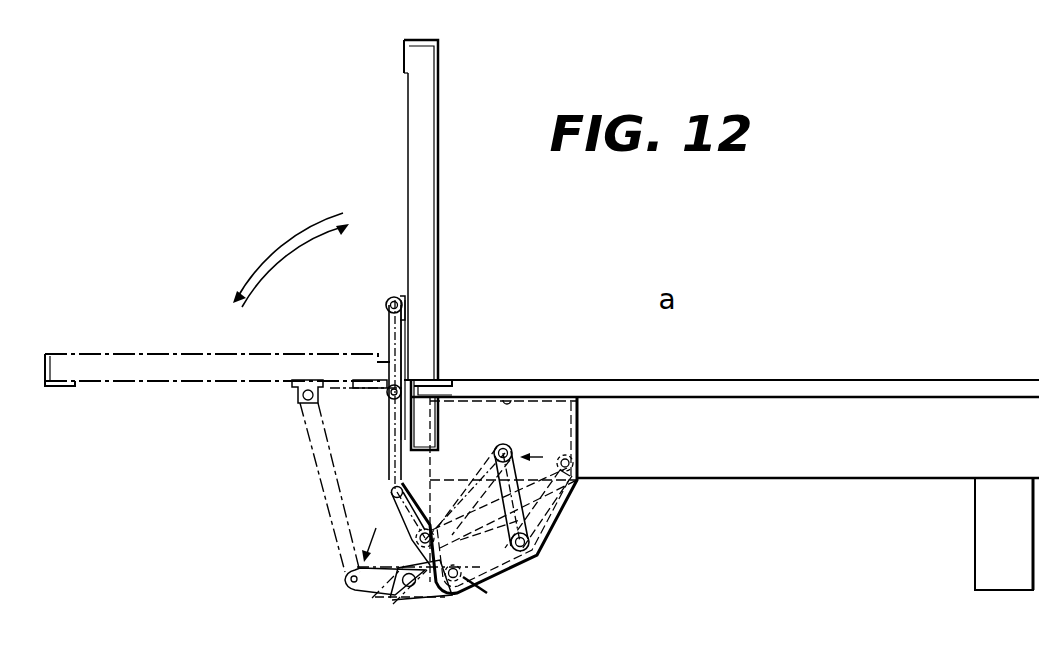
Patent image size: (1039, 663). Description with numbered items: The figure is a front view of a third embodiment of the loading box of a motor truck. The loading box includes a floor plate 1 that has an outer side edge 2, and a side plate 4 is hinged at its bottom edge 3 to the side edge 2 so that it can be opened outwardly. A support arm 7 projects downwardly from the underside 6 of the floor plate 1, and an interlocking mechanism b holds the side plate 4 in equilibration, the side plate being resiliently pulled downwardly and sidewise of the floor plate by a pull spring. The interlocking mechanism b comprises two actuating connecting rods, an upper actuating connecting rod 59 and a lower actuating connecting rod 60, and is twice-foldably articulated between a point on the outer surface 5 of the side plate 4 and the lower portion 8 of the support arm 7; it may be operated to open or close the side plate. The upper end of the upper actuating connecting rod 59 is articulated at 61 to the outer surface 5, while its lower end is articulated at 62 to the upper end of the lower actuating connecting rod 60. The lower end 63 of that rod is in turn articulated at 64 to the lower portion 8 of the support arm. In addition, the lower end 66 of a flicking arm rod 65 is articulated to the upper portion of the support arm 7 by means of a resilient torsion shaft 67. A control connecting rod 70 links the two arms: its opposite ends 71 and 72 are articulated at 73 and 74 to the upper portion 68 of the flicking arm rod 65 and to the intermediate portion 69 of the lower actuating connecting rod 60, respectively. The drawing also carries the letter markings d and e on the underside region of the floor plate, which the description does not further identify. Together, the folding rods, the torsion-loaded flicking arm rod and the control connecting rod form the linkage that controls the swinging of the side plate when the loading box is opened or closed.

The floor plate 1 is at (736, 386).
The outer side edge 2 is at (420, 390).
The bottom edge 3 is at (430, 372).
The side plate 4 is at (432, 148).
The outer surface 5 is at (404, 180).
The underside 6 is at (506, 398).
The support arm 7 is at (547, 523).
The lower portion 8 is at (470, 583).
The upper actuating connecting rod 59 is at (390, 412).
The lower actuating connecting rod 60 is at (392, 492).
The articulation point 61 is at (390, 297).
The articulation point 62 is at (393, 476).
The lower end 63 is at (427, 592).
The articulation point 64 is at (452, 585).
The flicking arm rod 65 is at (567, 507).
The lower end 66 is at (547, 543).
The resilient torsion shaft 67 is at (533, 557).
The upper portion 68 is at (580, 480).
The intermediate portion 69 is at (393, 535).
The control connecting rod 70 is at (510, 572).
The end 71 is at (388, 583).
The end 72 is at (548, 446).
The articulation point 73 is at (417, 588).
The articulation point 74 is at (568, 455).
The interlocking mechanism b is at (395, 432).
The underside d is at (912, 468).
The leg e is at (983, 540).